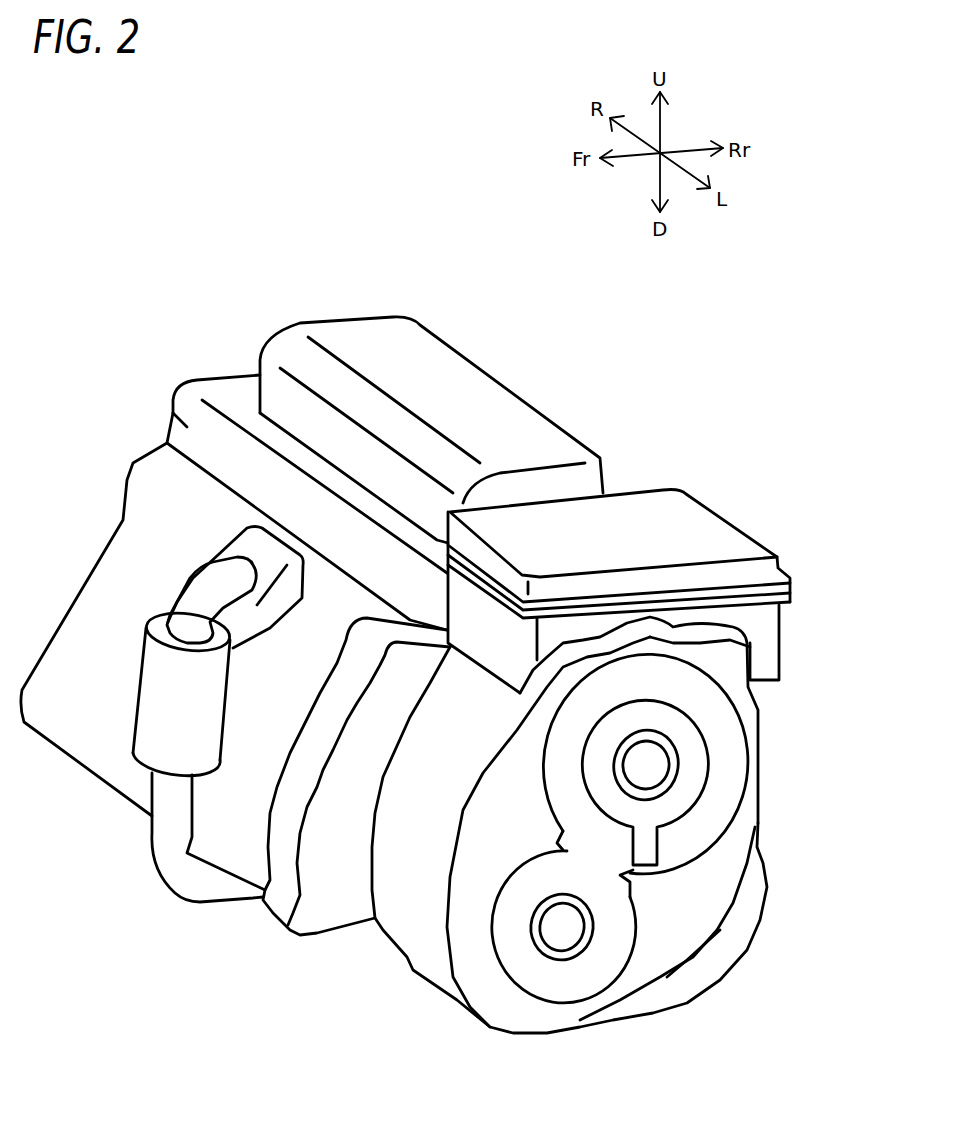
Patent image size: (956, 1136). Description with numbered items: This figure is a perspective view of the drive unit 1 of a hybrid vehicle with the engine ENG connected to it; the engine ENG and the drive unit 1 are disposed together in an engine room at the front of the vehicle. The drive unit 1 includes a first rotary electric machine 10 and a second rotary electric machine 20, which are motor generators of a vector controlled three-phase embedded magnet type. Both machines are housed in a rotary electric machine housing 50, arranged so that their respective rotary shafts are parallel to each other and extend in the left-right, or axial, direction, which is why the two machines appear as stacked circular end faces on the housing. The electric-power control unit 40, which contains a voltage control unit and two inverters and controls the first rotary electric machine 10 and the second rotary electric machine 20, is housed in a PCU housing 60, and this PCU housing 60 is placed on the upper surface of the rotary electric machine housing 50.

The engine ENG is at (173, 412).
The drive unit 1 is at (788, 552).
The first rotary electric machine 10 is at (723, 707).
The second rotary electric machine 20 is at (518, 965).
The electric-power control unit 40 is at (587, 537).
The rotary electric machine housing 50 is at (763, 775).
The PCU housing 60 is at (700, 517).